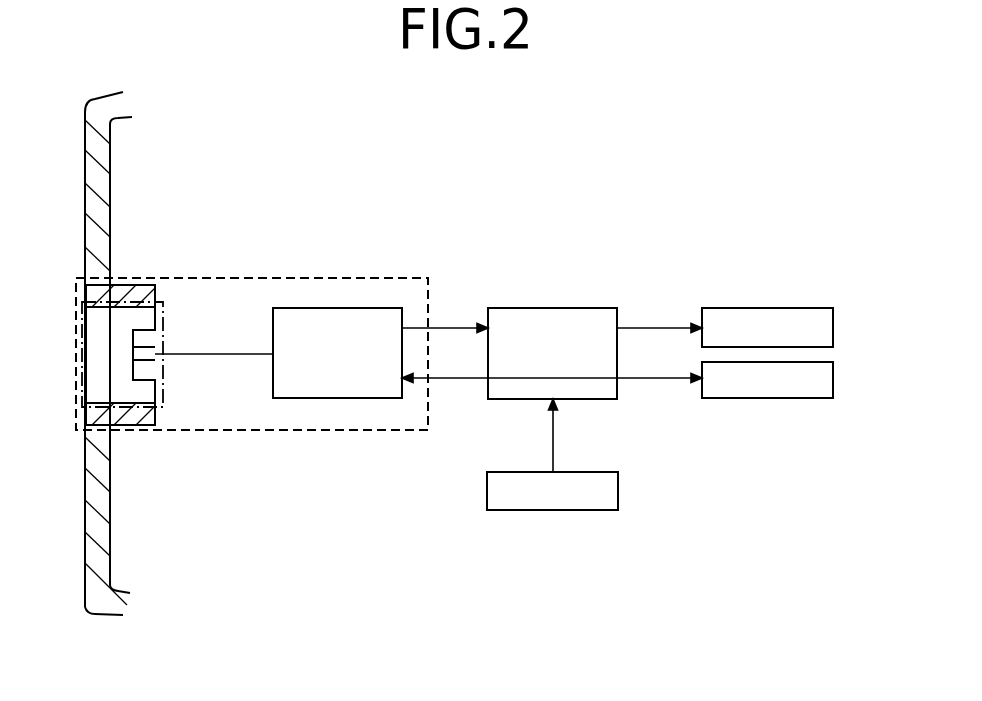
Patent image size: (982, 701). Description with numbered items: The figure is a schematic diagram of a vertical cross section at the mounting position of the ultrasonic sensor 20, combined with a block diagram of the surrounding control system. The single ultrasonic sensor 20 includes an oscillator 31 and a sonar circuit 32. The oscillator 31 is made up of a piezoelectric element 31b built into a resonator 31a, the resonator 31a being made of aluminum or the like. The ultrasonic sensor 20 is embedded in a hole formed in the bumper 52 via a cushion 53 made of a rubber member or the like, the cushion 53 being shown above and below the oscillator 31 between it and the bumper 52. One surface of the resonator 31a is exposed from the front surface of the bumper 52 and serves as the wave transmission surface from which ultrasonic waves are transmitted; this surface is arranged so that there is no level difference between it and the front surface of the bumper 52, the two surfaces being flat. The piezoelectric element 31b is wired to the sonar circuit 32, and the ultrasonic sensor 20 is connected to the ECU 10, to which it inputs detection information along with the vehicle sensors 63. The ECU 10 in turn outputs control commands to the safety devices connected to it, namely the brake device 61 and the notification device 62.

The ECU 10 is at (528, 308).
The ultrasonic sensor 20 is at (302, 431).
The oscillator 31 is at (163, 330).
The resonator 31a is at (86, 334).
The piezoelectric element 31b is at (160, 358).
The sonar circuit 32 is at (313, 308).
The bumper 52 is at (95, 105).
The cushion 53 is at (130, 278).
The brake device 61 is at (833, 327).
The notification device 62 is at (833, 378).
The vehicle sensors 63 is at (598, 472).